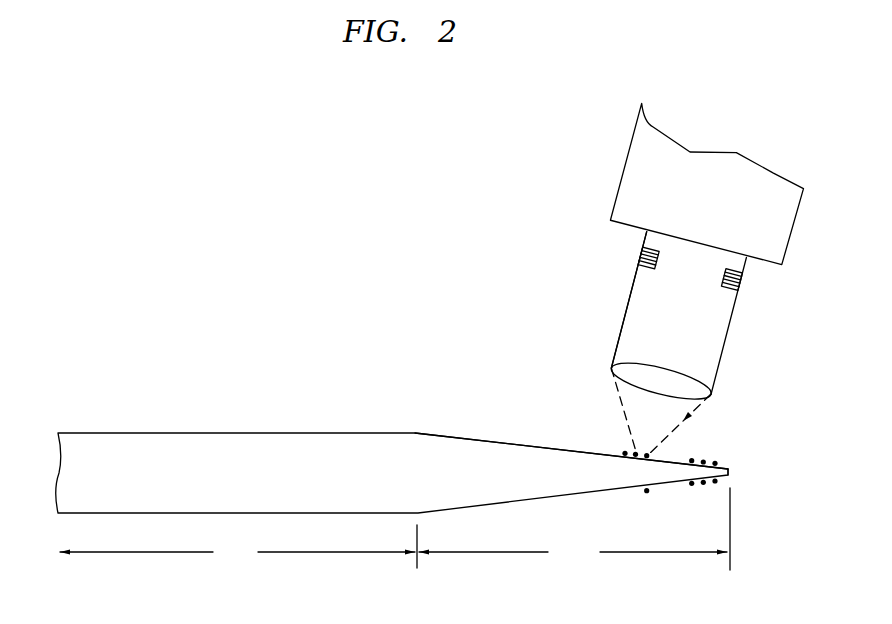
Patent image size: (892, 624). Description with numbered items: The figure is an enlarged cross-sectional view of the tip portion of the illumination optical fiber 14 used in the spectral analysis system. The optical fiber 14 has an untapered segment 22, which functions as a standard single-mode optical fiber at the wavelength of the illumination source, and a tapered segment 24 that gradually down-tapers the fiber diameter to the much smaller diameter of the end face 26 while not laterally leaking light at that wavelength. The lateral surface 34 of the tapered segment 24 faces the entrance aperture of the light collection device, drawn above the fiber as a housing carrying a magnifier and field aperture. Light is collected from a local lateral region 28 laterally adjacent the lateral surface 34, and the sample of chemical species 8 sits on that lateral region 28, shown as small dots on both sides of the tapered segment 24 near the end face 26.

The chemical species 8 is at (624, 452).
The optical fiber 14 is at (293, 382).
The untapered segment 22 is at (238, 546).
The tapered segment 24 is at (574, 529).
The end face 26 is at (733, 472).
The local lateral region 28 is at (688, 419).
The lateral surface 34 is at (522, 446).